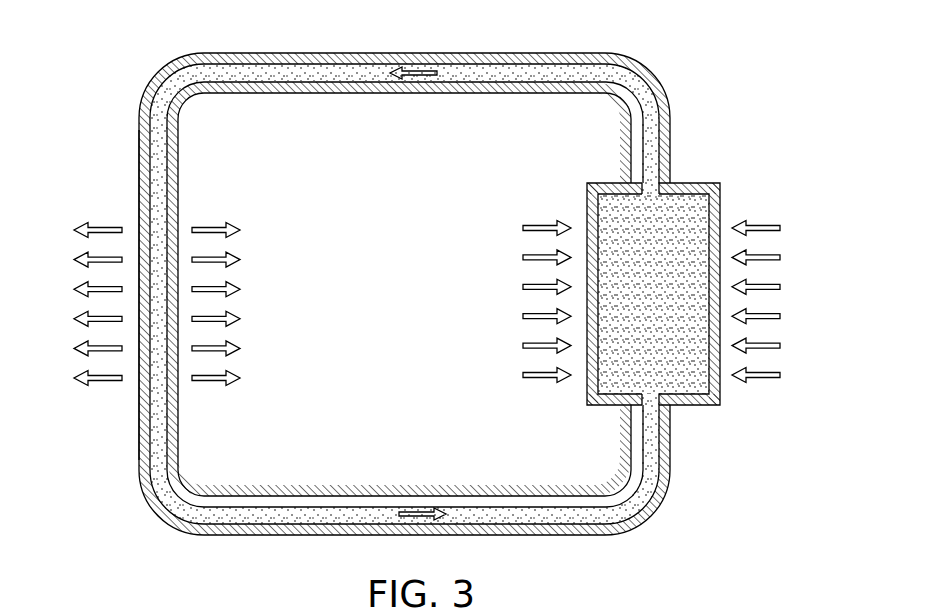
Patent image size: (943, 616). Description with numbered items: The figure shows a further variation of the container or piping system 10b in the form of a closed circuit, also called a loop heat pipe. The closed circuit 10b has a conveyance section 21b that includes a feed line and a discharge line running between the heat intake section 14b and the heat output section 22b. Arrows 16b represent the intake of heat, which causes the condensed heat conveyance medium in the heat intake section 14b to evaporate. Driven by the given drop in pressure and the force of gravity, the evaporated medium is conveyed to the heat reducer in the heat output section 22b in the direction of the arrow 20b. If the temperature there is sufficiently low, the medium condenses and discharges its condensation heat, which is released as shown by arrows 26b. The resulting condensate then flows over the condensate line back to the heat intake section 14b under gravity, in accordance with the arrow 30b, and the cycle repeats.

The container / piping system 10b is at (433, 294).
The heat intake section 14b is at (721, 406).
The arrows representing intake of heat 16b is at (758, 225).
The arrow 20b is at (418, 69).
The conveyance section 21b is at (547, 53).
The heat output section 22b is at (138, 398).
The arrows representing outflow of heat 26b is at (112, 224).
The arrow 30b is at (409, 521).